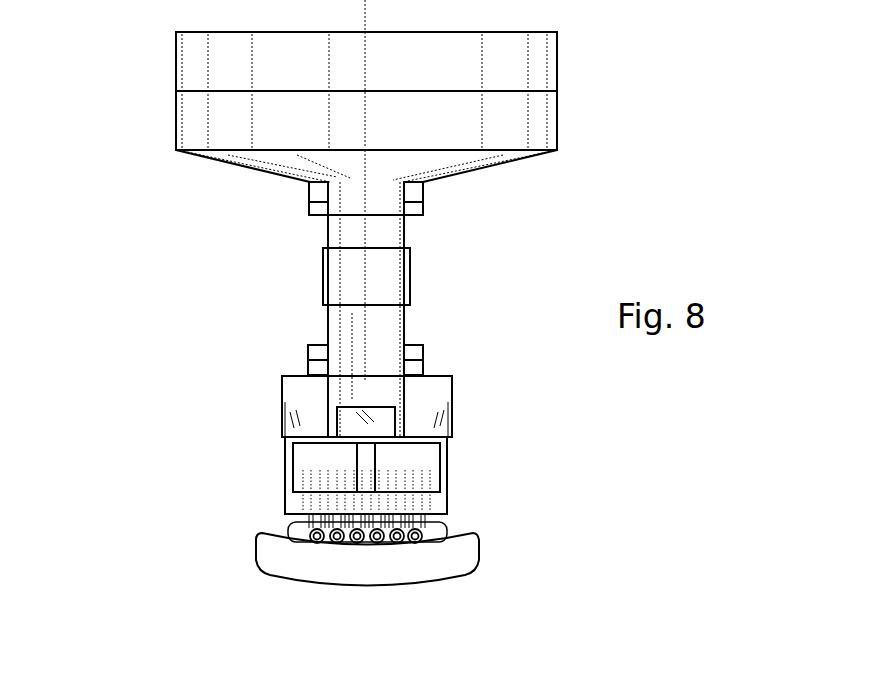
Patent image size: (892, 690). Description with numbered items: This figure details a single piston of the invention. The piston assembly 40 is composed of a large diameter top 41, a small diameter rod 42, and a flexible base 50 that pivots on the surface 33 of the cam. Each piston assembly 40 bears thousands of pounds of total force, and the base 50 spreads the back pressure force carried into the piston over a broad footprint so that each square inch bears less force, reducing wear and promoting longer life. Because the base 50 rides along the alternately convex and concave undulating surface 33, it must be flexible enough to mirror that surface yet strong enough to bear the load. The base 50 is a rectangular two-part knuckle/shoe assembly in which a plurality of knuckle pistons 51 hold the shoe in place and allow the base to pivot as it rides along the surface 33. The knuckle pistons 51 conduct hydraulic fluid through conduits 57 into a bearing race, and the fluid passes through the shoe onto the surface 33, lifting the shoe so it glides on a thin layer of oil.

The piston assembly 40 is at (135, 211).
The large diameter top 41 is at (560, 122).
The small diameter rod 42 is at (405, 232).
The flexible base 50 is at (284, 456).
The knuckle pistons 51 is at (285, 498).
The conduits 57 is at (428, 503).
The surface 33 is at (463, 532).